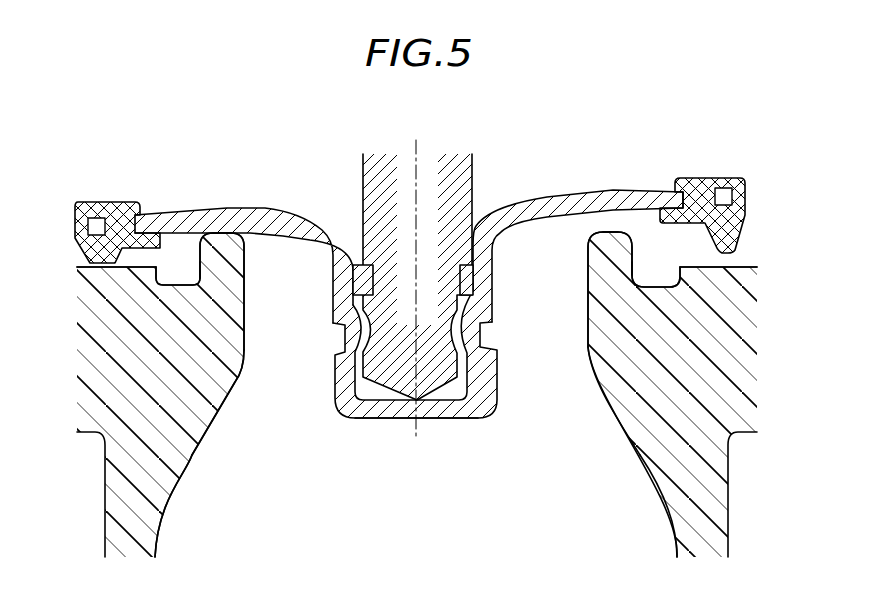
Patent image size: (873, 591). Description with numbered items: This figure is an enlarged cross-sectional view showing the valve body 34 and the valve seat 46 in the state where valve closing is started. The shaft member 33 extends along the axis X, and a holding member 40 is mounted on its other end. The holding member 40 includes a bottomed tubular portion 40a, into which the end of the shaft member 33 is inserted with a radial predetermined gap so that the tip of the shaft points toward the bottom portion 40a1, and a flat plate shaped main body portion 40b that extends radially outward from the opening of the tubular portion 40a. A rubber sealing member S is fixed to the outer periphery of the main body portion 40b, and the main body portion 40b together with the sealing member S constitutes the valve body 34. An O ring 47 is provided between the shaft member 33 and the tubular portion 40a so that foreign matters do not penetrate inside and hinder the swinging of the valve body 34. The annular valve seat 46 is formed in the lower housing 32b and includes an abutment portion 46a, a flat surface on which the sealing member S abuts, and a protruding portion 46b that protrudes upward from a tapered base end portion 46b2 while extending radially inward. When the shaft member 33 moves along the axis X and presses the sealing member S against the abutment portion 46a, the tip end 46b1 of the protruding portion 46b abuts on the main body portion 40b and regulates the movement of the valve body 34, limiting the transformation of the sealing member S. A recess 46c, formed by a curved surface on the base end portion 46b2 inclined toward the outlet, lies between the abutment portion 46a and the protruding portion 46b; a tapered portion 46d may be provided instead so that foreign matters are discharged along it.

The shaft member 33 is at (363, 184).
The valve body 34 is at (412, 297).
The holding member 40 is at (412, 309).
The tubular portion 40a is at (346, 362).
The bottom portion 40a1 is at (395, 413).
The main body portion 40b is at (210, 220).
The valve seat 46 is at (112, 388).
The lower housing 32b is at (413, 394).
The abutment portion 46a is at (113, 258).
The protruding portion 46b is at (232, 252).
The tip end 46b1 is at (222, 231).
The base end portion 46b2 is at (168, 478).
The recess 46c is at (177, 283).
The tapered portion 46d is at (217, 423).
The O ring 47 is at (474, 278).
The sealing member S is at (83, 215).
The axis X is at (415, 279).